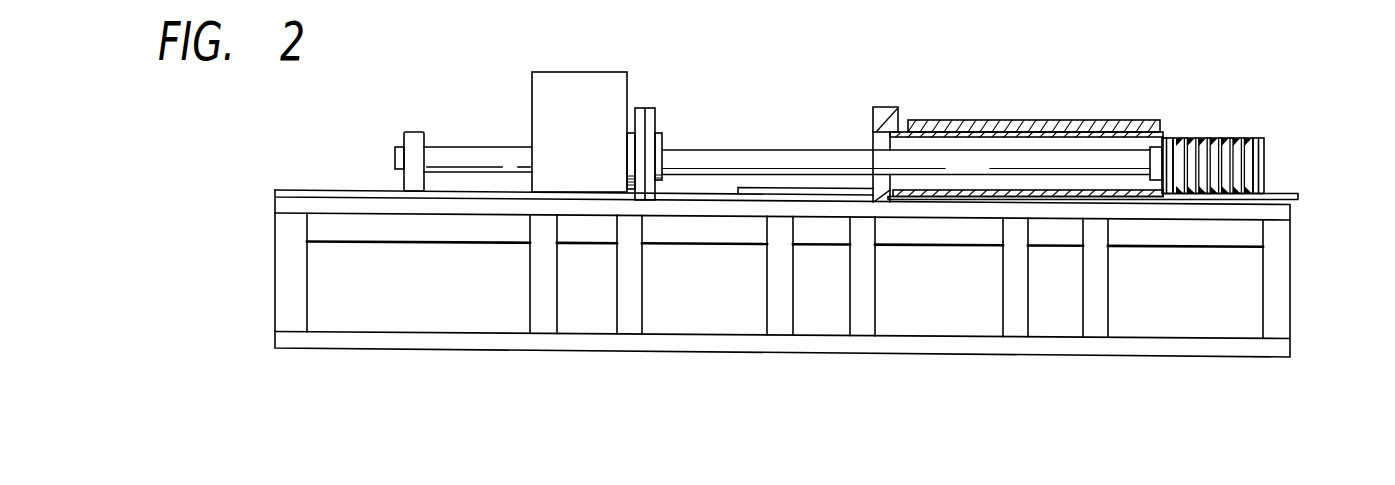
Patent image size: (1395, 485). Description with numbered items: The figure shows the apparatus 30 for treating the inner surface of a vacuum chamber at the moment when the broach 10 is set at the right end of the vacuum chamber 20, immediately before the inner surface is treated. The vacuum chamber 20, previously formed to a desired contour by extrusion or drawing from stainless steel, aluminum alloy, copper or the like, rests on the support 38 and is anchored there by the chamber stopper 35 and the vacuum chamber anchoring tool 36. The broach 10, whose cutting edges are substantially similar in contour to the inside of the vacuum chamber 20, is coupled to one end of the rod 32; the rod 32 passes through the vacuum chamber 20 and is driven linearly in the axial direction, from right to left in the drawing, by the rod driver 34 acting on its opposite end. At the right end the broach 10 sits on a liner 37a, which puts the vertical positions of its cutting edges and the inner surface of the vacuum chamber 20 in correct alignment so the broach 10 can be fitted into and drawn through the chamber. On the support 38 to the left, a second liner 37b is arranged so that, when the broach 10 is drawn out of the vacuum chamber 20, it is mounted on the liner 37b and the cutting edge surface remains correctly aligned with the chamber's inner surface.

The broach 10 is at (1257, 138).
The vacuum chamber 20 is at (1167, 137).
The apparatus for treating the inner surface of a vacuum chamber 30 is at (878, 364).
The rod 32 is at (795, 150).
The rod driver 34 is at (531, 110).
The chamber stopper 35 is at (877, 107).
The vacuum chamber anchoring tool 36 is at (978, 120).
The liner 37a is at (1293, 193).
The liner 37b is at (754, 187).
The support 38 is at (300, 202).